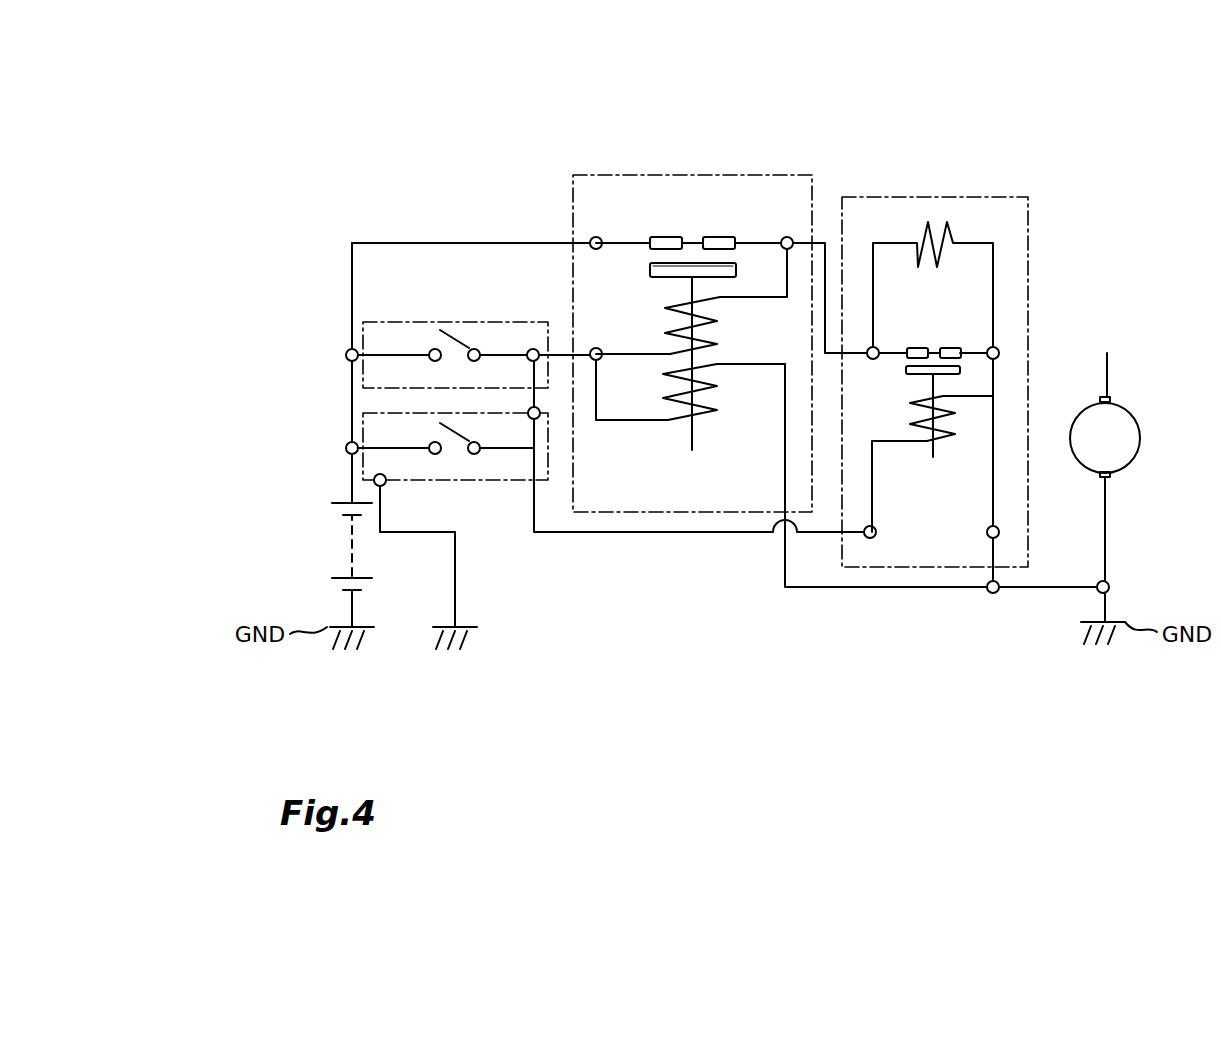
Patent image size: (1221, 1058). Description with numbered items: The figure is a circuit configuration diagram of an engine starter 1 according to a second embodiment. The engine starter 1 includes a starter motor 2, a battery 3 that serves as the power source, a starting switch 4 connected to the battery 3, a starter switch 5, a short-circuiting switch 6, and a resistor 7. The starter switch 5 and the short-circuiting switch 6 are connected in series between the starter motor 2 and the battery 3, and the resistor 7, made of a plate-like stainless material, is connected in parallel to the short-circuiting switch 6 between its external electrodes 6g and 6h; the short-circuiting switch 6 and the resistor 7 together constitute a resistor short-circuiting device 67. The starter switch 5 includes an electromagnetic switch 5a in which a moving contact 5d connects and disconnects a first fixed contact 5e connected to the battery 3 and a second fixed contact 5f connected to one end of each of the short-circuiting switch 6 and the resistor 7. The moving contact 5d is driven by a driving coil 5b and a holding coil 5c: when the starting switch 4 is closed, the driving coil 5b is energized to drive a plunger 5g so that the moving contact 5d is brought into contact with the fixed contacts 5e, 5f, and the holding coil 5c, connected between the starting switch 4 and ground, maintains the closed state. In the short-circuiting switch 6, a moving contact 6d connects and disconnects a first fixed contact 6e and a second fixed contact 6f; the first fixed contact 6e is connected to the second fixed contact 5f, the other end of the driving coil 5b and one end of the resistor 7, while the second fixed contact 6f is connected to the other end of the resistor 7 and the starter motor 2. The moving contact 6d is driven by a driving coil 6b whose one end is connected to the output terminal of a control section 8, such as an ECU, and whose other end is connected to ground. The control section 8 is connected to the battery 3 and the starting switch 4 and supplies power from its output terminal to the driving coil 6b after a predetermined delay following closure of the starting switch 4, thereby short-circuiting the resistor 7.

The engine starter 1 is at (317, 243).
The starter motor 2 is at (1122, 407).
The battery 3 is at (327, 513).
The starting switch 4 is at (467, 342).
The starter switch 5 is at (689, 175).
The electromagnetic switch 5a is at (737, 216).
The driving coil 5b is at (718, 323).
The holding coil 5c is at (685, 405).
The moving contact 5d is at (650, 269).
The first fixed contact 5e is at (658, 237).
The second fixed contact 5f is at (718, 237).
The plunger 5g is at (697, 452).
The short-circuiting switch 6 is at (900, 495).
The driving coil 6b is at (943, 437).
The moving contact 6d is at (965, 365).
The first fixed contact 6e is at (915, 348).
The second fixed contact 6f is at (955, 348).
The external electrode 6g is at (876, 358).
The external electrode 6h is at (996, 358).
The resistor 7 is at (928, 232).
The control section 8 is at (450, 452).
The resistor short-circuiting device 67 is at (1005, 197).